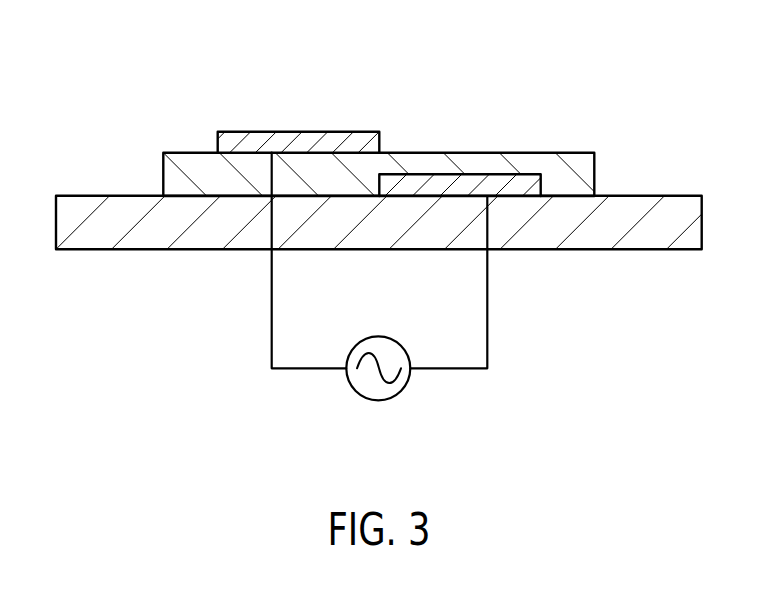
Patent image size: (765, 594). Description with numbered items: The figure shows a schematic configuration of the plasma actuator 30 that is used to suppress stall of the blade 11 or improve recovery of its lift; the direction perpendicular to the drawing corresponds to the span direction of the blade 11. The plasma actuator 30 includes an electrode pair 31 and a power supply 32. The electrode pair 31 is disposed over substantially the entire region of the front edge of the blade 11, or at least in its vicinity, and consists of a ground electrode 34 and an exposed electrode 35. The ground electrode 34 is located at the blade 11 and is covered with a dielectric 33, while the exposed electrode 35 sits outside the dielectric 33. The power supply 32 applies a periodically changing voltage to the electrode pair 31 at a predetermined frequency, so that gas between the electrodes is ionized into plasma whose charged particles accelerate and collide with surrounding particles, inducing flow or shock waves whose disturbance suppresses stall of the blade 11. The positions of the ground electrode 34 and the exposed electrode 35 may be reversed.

The blade 11 is at (586, 242).
The plasma actuator 30 is at (510, 95).
The electrode pair 31 is at (346, 131).
The power supply 32 is at (382, 400).
The dielectric 33 is at (567, 163).
The ground electrode 34 is at (422, 182).
The exposed electrode 35 is at (252, 141).